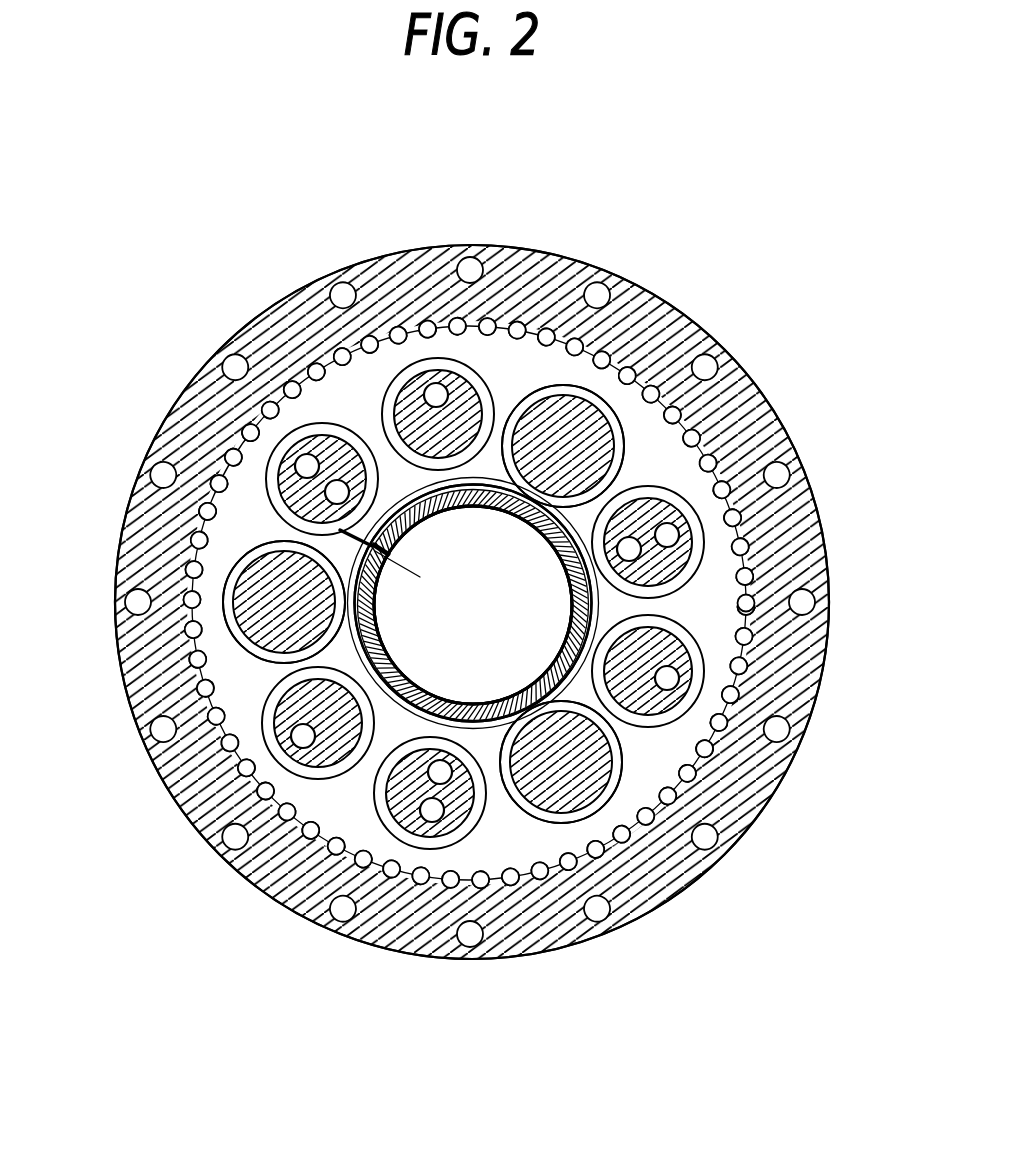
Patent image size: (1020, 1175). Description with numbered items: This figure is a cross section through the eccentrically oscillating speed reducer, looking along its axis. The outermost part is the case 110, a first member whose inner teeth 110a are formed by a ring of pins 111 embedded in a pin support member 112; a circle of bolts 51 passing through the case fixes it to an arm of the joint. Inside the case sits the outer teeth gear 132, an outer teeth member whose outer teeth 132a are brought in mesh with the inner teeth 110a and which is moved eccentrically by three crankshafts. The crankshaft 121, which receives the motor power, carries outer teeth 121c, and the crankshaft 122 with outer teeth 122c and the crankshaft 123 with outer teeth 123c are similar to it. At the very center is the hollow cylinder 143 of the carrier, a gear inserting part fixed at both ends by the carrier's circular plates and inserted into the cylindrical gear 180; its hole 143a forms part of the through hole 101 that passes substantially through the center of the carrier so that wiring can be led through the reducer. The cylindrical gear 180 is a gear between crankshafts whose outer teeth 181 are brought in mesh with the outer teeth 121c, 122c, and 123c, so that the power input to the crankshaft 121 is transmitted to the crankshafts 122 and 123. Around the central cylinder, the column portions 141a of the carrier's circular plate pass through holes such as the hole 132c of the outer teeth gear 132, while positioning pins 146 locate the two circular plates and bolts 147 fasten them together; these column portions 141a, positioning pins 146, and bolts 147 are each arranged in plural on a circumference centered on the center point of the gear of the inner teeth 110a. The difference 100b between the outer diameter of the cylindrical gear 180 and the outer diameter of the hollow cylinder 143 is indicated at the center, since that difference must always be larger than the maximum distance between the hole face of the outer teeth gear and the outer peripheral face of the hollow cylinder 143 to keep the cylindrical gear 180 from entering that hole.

The case 110 is at (757, 403).
The inner teeth 110a is at (252, 427).
The pin 111 is at (250, 430).
The pin support member 112 is at (790, 462).
The crankshaft 121 is at (257, 587).
The outer teeth 121c is at (230, 618).
The crankshaft 122 is at (562, 783).
The outer teeth 122c is at (590, 803).
The crankshaft 123 is at (587, 408).
The outer teeth 123c is at (573, 387).
The outer teeth gear 132 is at (505, 370).
The outer teeth 132a is at (752, 594).
The hole 132c is at (407, 367).
The column portion 141a is at (328, 447).
The hollow cylinder 143 is at (392, 660).
The hole 143a is at (547, 537).
The positioning pin 146 is at (440, 772).
The bolt 147 is at (293, 742).
The bolt 51 is at (230, 840).
The difference 100b is at (377, 548).
The through hole 101 is at (528, 688).
The cylindrical gear 180 is at (593, 612).
The outer teeth 181 is at (557, 688).